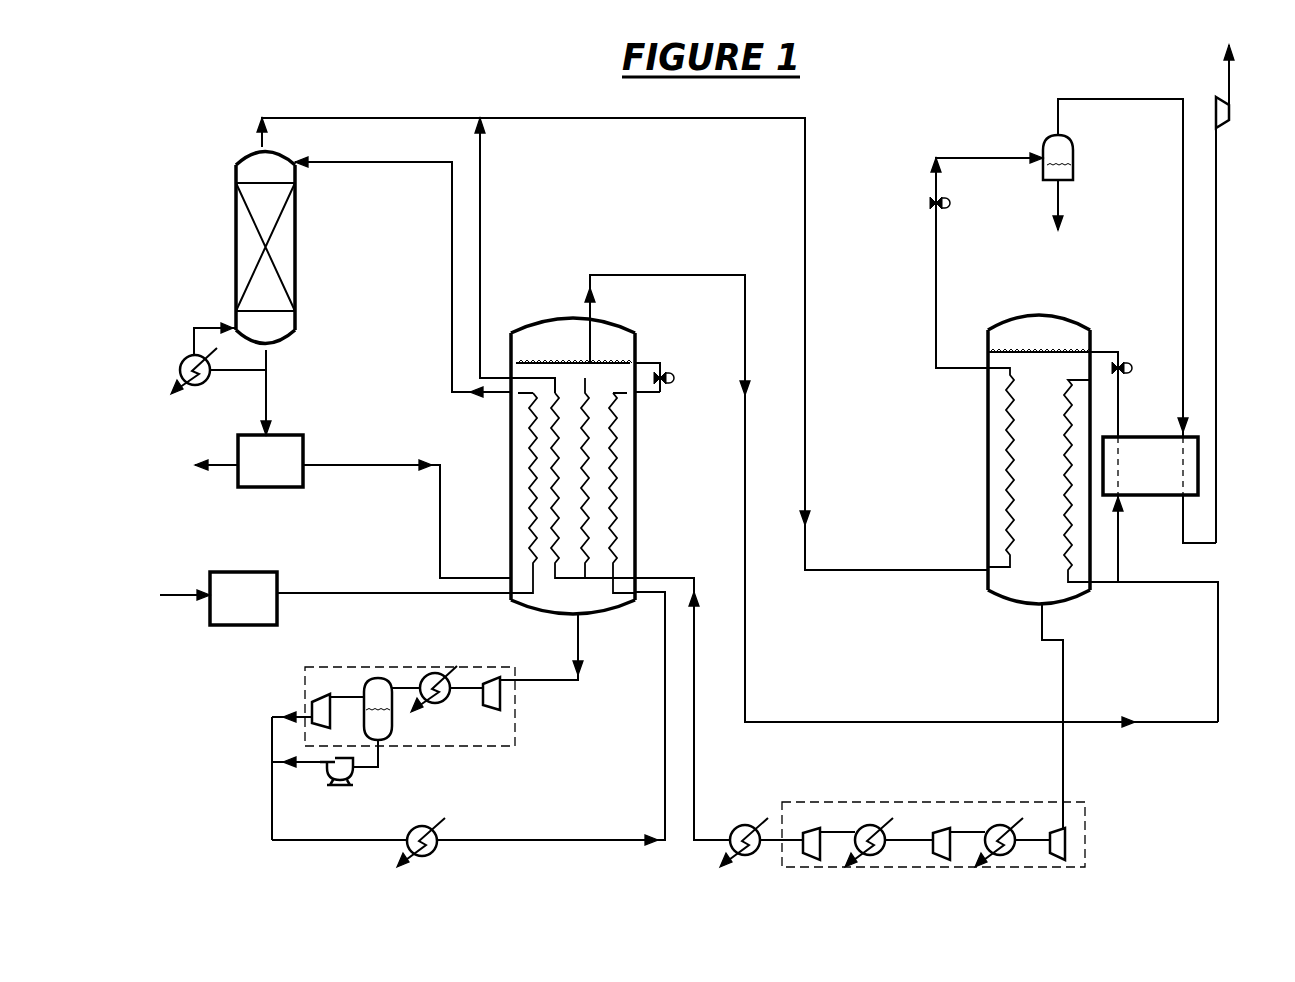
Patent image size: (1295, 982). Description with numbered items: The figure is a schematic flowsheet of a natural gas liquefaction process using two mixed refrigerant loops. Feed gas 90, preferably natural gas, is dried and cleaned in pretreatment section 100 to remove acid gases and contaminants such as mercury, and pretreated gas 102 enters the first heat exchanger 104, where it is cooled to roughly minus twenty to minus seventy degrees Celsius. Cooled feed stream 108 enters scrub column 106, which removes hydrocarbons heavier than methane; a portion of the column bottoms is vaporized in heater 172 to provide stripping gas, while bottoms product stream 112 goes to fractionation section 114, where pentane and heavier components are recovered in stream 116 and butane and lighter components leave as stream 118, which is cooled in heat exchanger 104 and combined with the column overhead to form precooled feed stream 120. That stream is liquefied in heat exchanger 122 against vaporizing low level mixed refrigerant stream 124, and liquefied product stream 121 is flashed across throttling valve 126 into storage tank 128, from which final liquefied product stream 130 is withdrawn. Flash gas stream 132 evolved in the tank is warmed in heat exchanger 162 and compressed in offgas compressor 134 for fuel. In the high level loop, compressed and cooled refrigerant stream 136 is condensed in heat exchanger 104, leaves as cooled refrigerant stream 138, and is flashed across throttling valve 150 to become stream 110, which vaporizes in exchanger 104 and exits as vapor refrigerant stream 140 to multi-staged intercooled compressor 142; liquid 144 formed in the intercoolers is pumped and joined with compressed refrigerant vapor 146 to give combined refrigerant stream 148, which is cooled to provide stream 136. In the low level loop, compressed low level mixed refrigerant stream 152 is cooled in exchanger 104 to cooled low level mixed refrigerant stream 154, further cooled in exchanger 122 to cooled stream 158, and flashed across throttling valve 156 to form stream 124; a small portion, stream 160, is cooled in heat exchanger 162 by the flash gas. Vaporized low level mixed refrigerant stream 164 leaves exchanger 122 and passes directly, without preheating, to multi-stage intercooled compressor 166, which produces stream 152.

The feed gas 90 is at (176, 604).
The pretreatment section 100 is at (240, 628).
The pretreated gas 102 is at (350, 601).
The first heat exchanger 104 is at (528, 618).
The scrub column 106 is at (300, 222).
The cooled feed stream 108 is at (362, 168).
The high level mixed refrigerant stream 110 is at (660, 338).
The bottoms product stream 112 is at (274, 393).
The fractionation section 114 is at (262, 493).
The pentane and heavier components stream 116 is at (197, 475).
The butane and lighter components stream 118 is at (366, 441).
The precooled feed stream 120 is at (630, 122).
The liquefied product stream 121 is at (928, 284).
The heat exchanger 122 is at (984, 471).
The low level mixed refrigerant stream 124 is at (1100, 354).
The throttling valve 126 is at (952, 204).
The storage tank 128 is at (1088, 158).
The final liquefied product stream 130 is at (1058, 232).
The flash gas stream 132 is at (1116, 94).
The offgas compressor 134 is at (1232, 118).
The high level mixed refrigerant stream 136 is at (538, 834).
The cooled refrigerant stream 138 is at (660, 400).
The vapor refrigerant stream 140 is at (548, 690).
The multi-staged intercooled compressor 142 is at (452, 755).
The liquid 144 is at (385, 765).
The compressed refrigerant vapor 146 is at (274, 705).
The combined refrigerant stream 148 is at (268, 794).
The throttling valve 150 is at (686, 376).
The compressed low level mixed refrigerant stream 152 is at (702, 738).
The cooled low level mixed refrigerant stream 154 is at (752, 642).
The throttling valve 156 is at (1144, 364).
The cooled stream 158 is at (1098, 380).
The refrigerant stream portion 160 is at (1133, 554).
The heat exchanger 162 is at (1166, 512).
The vaporized low level mixed refrigerant stream 164 is at (1078, 639).
The multi-stage intercooled compressor 166 is at (1082, 802).
The heater 172 is at (200, 395).